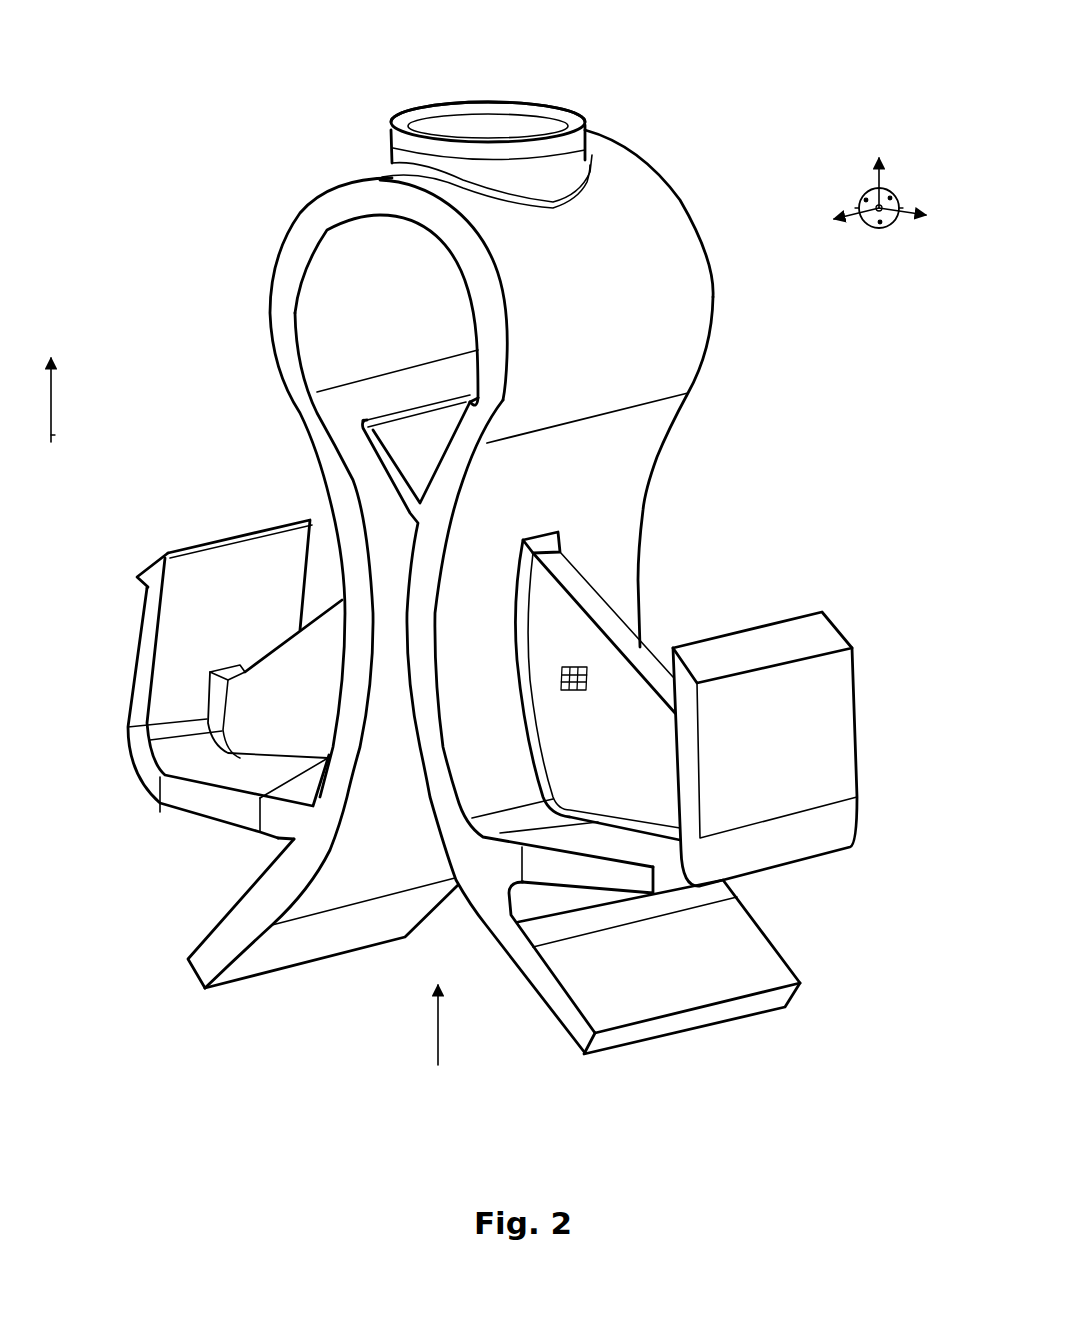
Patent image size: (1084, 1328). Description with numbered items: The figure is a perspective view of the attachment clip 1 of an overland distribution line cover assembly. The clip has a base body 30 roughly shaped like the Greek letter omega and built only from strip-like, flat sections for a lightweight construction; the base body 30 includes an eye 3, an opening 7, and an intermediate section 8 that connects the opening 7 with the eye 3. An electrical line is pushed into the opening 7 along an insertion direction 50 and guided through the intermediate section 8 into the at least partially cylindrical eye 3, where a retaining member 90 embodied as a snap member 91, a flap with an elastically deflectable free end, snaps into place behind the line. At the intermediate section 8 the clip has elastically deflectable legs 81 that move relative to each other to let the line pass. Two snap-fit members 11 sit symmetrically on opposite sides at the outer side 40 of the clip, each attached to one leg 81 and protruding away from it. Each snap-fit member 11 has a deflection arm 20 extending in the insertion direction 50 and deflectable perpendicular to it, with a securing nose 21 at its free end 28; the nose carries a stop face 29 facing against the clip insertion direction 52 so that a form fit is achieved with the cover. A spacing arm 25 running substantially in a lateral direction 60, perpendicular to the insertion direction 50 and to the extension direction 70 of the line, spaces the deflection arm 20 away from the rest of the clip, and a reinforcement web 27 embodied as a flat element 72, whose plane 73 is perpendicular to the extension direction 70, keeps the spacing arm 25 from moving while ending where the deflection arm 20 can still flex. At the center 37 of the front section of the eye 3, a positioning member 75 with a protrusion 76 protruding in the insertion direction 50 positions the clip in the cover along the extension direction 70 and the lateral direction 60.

The attachment clip 1 is at (231, 93).
The eye 3 is at (351, 310).
The opening 7 is at (343, 1049).
The intermediate section 8 is at (379, 680).
The snap-fit member 11 is at (884, 615).
The deflection arm 20 is at (759, 765).
The securing nose 21 is at (729, 667).
The spacing arm 25 is at (207, 778).
The reinforcement web 27 is at (640, 655).
The free end 28 is at (792, 588).
The stop face 29 is at (822, 664).
The base body 30 is at (702, 455).
The center 37 is at (457, 80).
The outer side 40 is at (782, 363).
The insertion direction 50 is at (886, 168).
The clip insertion direction 52 is at (51, 435).
The lateral direction 60 is at (900, 215).
The extension direction 70 is at (852, 215).
The flat element 72 is at (582, 767).
The plane 73 is at (562, 682).
The positioning member 75 is at (565, 91).
The protrusion 76 is at (405, 91).
The elastically deflectable legs 81 is at (640, 475).
The retaining member 90 is at (399, 455).
The snap member 91 is at (370, 430).